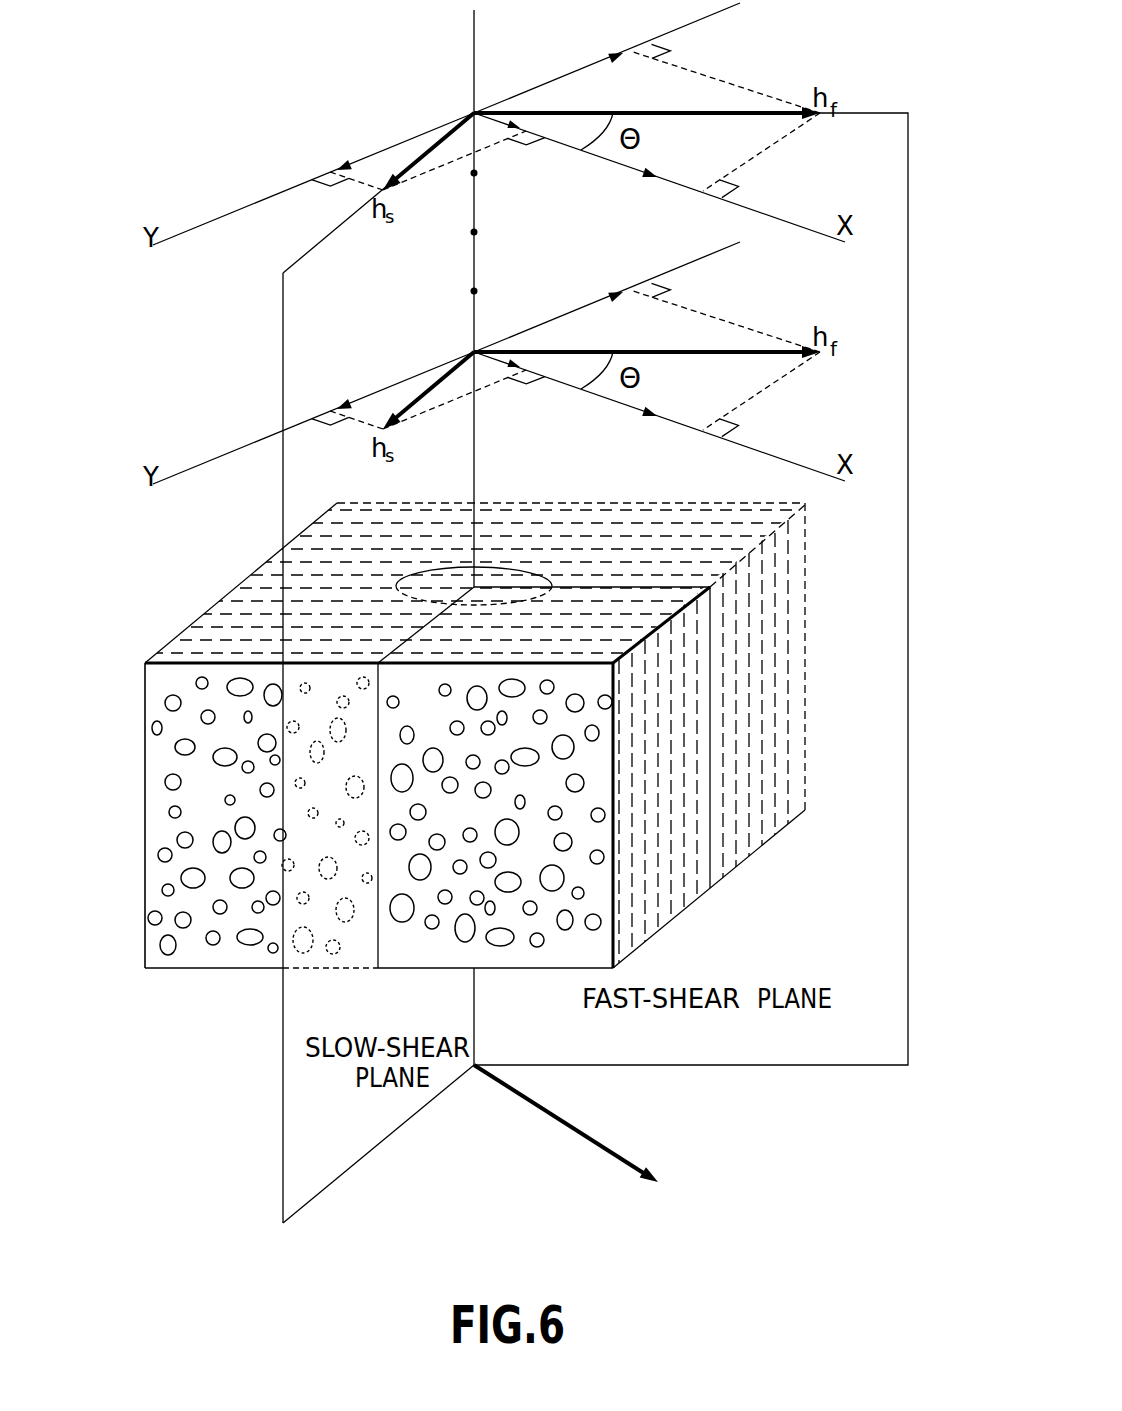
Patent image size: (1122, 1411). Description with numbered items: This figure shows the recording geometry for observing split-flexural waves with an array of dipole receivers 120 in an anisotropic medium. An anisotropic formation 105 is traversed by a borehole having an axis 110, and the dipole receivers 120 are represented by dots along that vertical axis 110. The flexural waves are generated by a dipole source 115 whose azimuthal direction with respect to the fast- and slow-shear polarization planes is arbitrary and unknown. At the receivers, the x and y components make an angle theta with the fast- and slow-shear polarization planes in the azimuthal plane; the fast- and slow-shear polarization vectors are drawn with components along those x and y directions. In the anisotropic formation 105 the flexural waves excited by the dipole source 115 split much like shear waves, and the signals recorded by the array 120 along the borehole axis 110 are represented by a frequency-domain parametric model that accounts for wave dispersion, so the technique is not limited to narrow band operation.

The anisotropic formation 105 is at (193, 803).
The borehole axis 110 is at (478, 1038).
The dipole source 115 is at (620, 1123).
The dipole receiver array 120 is at (448, 247).